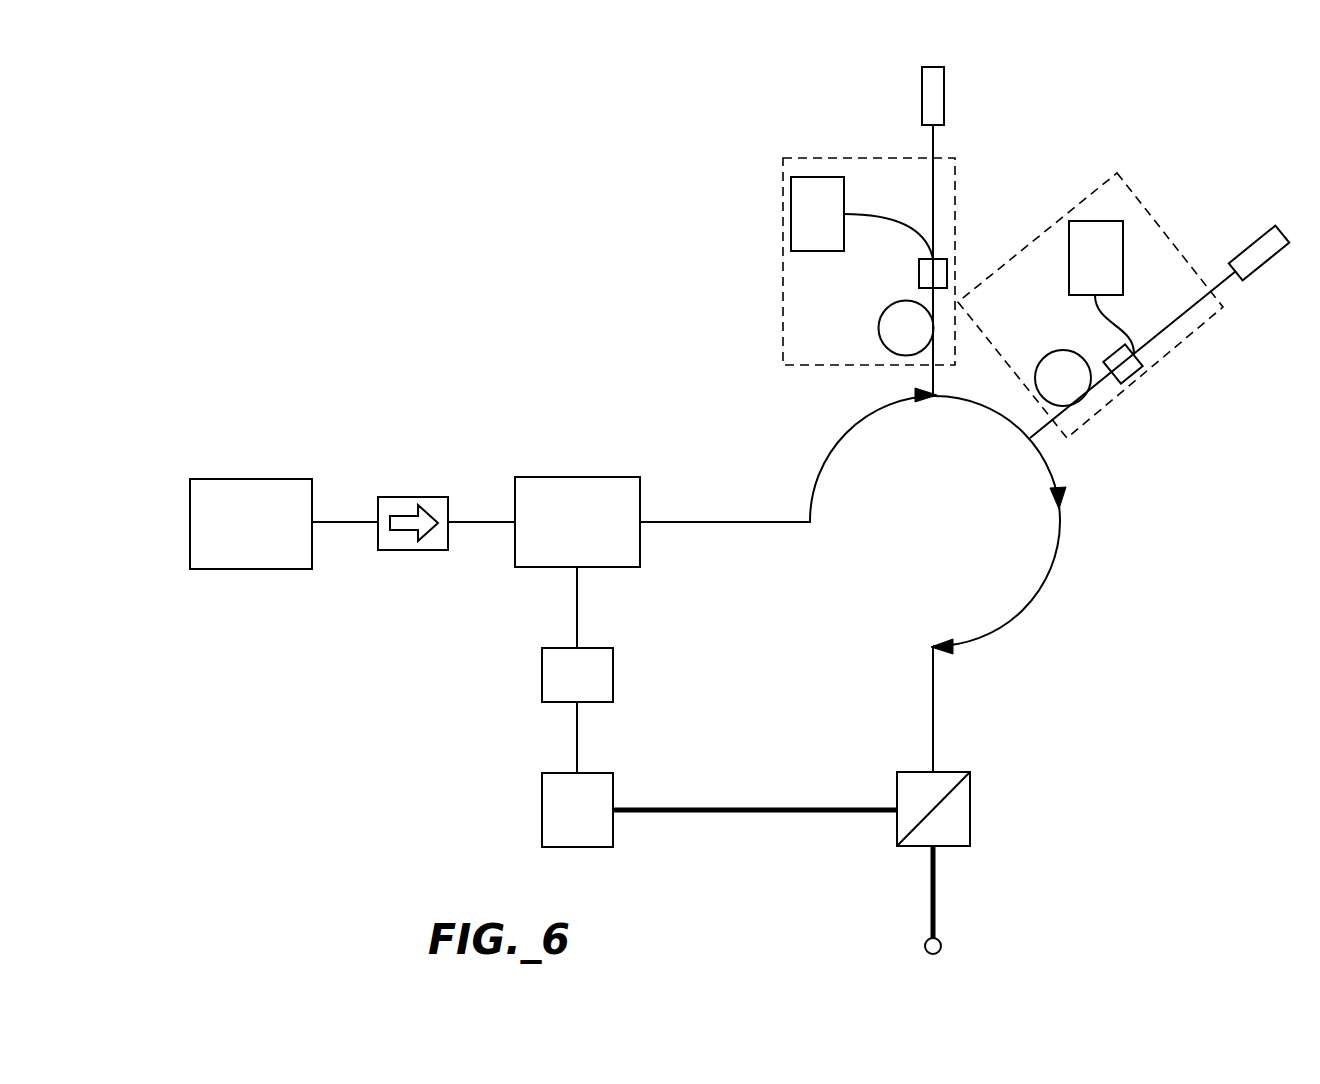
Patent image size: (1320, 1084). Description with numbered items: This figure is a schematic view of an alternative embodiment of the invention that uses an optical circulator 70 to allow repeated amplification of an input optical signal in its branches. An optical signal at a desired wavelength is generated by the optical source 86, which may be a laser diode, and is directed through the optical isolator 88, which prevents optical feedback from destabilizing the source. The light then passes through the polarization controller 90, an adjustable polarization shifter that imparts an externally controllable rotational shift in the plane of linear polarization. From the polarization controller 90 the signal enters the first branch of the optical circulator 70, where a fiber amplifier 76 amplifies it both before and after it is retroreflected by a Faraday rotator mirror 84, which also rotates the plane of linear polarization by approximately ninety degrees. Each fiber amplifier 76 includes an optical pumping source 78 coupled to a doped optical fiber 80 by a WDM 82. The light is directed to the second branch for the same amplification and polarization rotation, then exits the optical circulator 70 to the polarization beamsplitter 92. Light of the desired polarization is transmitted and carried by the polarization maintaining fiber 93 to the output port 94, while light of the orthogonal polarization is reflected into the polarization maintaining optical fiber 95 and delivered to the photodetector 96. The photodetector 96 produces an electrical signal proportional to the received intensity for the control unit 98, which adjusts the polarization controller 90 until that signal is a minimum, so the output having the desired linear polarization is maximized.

The optical circulator 70 is at (1037, 563).
The fiber amplifier 76 is at (848, 158).
The optical pumping source 78 is at (845, 196).
The doped optical fiber 80 is at (878, 330).
The WDM 82 is at (919, 277).
The Faraday rotator mirror 84 is at (921, 112).
The optical source 86 is at (258, 479).
The optical isolator 88 is at (405, 497).
The polarization controller 90 is at (557, 477).
The polarization beamsplitter 92 is at (913, 772).
The polarization maintaining fiber 93 is at (928, 895).
The output port 94 is at (922, 945).
The polarization maintaining optical fiber 95 is at (722, 808).
The photodetector 96 is at (555, 773).
The control unit 98 is at (555, 648).